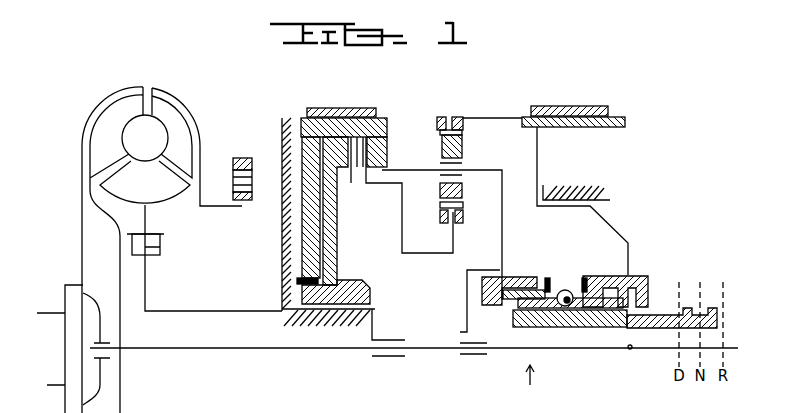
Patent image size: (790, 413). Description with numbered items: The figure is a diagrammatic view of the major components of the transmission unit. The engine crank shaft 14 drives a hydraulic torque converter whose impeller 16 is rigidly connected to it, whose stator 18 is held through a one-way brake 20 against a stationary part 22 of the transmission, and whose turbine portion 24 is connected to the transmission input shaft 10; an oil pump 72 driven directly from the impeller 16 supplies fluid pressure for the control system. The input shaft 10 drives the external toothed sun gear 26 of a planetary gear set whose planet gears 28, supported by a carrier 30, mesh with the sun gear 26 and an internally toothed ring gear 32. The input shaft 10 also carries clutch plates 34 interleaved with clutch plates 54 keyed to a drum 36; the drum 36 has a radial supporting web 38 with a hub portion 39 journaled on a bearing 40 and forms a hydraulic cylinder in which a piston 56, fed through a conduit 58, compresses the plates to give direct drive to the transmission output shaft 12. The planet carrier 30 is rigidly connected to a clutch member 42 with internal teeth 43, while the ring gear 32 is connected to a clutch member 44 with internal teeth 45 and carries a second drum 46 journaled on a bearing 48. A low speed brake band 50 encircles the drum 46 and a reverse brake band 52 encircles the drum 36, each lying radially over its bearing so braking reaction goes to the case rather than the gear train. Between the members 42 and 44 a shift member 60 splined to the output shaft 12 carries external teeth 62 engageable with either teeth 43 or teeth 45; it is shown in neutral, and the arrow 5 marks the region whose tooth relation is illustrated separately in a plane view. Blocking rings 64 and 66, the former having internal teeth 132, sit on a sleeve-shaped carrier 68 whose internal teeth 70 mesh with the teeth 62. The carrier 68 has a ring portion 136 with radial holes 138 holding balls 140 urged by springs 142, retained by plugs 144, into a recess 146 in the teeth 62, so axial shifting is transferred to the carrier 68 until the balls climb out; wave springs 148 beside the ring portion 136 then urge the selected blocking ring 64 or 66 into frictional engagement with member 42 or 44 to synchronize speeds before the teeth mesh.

The direction arrow 5 is at (537, 381).
The transmission input shaft 10 is at (323, 349).
The transmission output shaft 12 is at (632, 349).
The engine crank shaft 14 is at (56, 322).
The pump member or impeller 16 is at (180, 124).
The stator 18 is at (158, 196).
The one-way brake 20 is at (160, 247).
The stationary part of the transmission 22 is at (282, 264).
The turbine portion 24 is at (105, 132).
The sun gear 26 is at (453, 218).
The planet gears 28 is at (442, 148).
The planet carrier 30 is at (468, 169).
The ring gear 32 is at (443, 118).
The clutch plates 34 is at (351, 185).
The drum 36 is at (385, 118).
The radial supporting web 38 is at (302, 234).
The hub portion 39 is at (370, 293).
The bearing 40 is at (318, 317).
The internally toothed clutch member 42 is at (500, 276).
The internal teeth 43 is at (480, 312).
The internally toothed clutch member 44 is at (642, 274).
The internal teeth 45 is at (648, 309).
The drum 46 is at (598, 127).
The bearing 48 is at (587, 191).
The low speed brake band 50 is at (580, 106).
The reverse brake band 52 is at (344, 108).
The clutch plates 54 is at (365, 137).
The piston 56 is at (337, 261).
The conduit 58 is at (302, 292).
The shift member 60 is at (628, 324).
The external teeth 62 is at (570, 329).
The synchronizing blocking ring 64 is at (545, 277).
The synchronizing blocking ring 66 is at (600, 276).
The sleeve-shaped carrier 68 is at (618, 338).
The internal teeth 70 is at (540, 330).
The oil pump 72 is at (253, 159).
The internal teeth of blocking ring 132 is at (513, 328).
The ring portion 136 is at (568, 289).
The radial holes 138 is at (520, 290).
The balls 140 is at (570, 323).
The springs 142 is at (600, 278).
The discs or plugs 144 is at (565, 290).
The recess 146 is at (598, 330).
The wave springs 148 is at (588, 240).